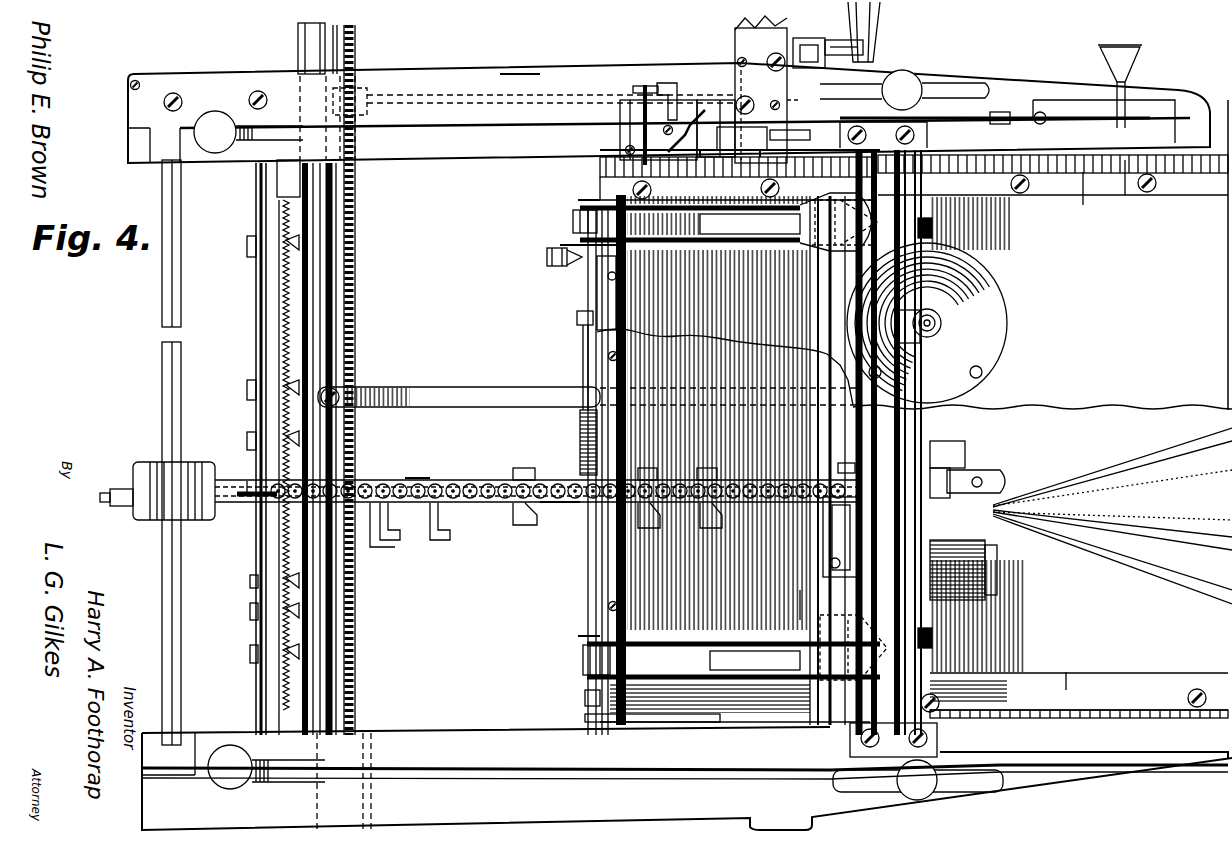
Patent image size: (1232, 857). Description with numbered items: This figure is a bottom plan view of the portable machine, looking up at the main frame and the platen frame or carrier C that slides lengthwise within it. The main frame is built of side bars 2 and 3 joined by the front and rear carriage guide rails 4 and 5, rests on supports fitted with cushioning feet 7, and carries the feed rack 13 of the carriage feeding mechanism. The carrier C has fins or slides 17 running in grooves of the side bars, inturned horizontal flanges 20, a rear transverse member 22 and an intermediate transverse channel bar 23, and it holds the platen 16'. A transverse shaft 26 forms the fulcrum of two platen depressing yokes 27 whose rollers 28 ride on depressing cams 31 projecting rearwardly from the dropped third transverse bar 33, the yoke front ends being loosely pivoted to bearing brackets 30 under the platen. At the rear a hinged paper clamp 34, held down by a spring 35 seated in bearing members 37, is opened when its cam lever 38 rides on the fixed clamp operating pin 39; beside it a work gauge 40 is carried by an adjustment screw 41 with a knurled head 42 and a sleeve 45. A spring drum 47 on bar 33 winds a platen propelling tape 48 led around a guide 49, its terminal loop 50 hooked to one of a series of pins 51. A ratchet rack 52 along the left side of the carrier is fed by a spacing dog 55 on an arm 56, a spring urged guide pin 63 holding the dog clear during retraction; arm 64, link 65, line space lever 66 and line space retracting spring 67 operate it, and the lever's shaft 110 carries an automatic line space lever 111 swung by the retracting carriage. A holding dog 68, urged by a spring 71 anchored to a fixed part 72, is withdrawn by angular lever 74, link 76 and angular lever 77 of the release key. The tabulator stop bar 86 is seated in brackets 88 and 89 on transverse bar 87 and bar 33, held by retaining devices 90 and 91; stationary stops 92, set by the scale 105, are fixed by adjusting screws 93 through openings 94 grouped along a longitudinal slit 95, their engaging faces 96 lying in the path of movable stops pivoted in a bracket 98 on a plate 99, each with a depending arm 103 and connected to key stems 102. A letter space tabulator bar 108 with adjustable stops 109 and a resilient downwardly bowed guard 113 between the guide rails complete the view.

The side bar 2 is at (579, 70).
The side bar 3 is at (687, 778).
The front carriage guide rail 4 is at (735, 22).
The rear carriage guide rail 5 is at (298, 46).
The cushioning feet 7 is at (214, 112).
The feed rack 13 is at (356, 46).
The panel 16' is at (1182, 255).
The fins or slides 17 is at (1128, 195).
The inturned horizontal flanges 20 is at (1053, 436).
The transverse member 22 is at (588, 578).
The intermediate transverse channel bar 23 is at (980, 395).
The transverse shaft 26 is at (797, 604).
The platen depressing yokes 27 is at (590, 206).
The rollers 28 is at (573, 215).
The bearing brackets 30 is at (932, 229).
The depressing cams 31 is at (733, 436).
The third transverse bar 33 is at (907, 598).
The hinged paper clamp 34 is at (601, 561).
The spring 35 is at (580, 419).
The bearing members 37 is at (577, 318).
The cam lever 38 is at (585, 719).
The clamp operating pin 39 is at (878, 740).
The work gauge 40 is at (616, 303).
The adjustment screw 41 is at (547, 258).
The knurled head 42 is at (567, 262).
The sleeve 45 is at (572, 244).
The spring drum 47 is at (990, 326).
The platen propelling tape 48 is at (718, 460).
The guide 49 is at (608, 278).
The terminal loop 50 is at (585, 347).
The pins 51 is at (608, 358).
The ratchet rack 52 is at (1088, 205).
The spacing dog 55 is at (740, 175).
The arm 56 is at (790, 140).
The spring urged guide pin 63 is at (710, 174).
The arm 64 is at (812, 38).
The link 65 is at (865, 47).
The line space lever 66 is at (882, 18).
The line space retracting spring 67 is at (790, 100).
The holding dog 68 is at (640, 135).
The spring 71 is at (643, 84).
The fixed part 72 is at (676, 83).
The angular lever 74 is at (700, 110).
The link 76 is at (975, 120).
The angular lever 77 is at (1115, 86).
The tabulator stop bar 86 is at (235, 504).
The transverse bar 87 is at (181, 321).
The bracket 88 is at (172, 483).
The bracket 89 is at (965, 446).
The front retaining device 90 is at (1002, 476).
The rear retaining device 91 is at (107, 496).
The stationary line space tabulator stops 92 is at (388, 542).
The adjusting screws 93 is at (420, 480).
The openings 94 is at (487, 480).
The longitudinal slit 95 is at (250, 481).
The engaging faces 96 is at (400, 549).
The bracket 98 is at (997, 562).
The plate 99 is at (823, 568).
The stems 102 is at (1133, 466).
The depending arm 103 is at (956, 570).
The scale 105 is at (560, 504).
The letter space tabulator bar 108 is at (250, 631).
The adjustable stops 109 is at (246, 250).
The shaft 110 is at (440, 92).
The automatic line space lever 111 is at (520, 72).
The guard 113 is at (448, 387).
The platen frame or carrier C is at (1203, 185).